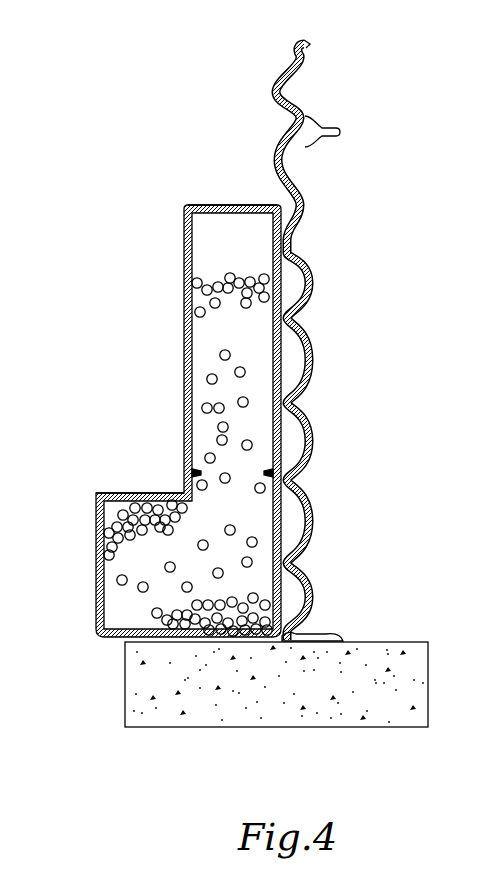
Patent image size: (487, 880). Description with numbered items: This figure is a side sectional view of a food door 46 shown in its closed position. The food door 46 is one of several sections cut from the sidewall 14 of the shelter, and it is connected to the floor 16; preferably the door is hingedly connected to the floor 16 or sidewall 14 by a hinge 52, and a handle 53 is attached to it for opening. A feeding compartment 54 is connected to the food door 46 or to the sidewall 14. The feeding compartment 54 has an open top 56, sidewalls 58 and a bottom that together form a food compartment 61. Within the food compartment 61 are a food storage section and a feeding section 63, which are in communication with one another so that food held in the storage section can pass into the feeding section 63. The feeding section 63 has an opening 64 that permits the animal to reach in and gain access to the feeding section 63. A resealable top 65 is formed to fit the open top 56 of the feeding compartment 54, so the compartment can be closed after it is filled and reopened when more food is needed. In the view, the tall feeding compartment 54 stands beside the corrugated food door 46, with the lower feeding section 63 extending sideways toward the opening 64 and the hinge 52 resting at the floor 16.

The sidewall 14 is at (299, 47).
The floor 16 is at (130, 642).
The food door 46 is at (358, 367).
The hinge 52 is at (330, 638).
The handle 53 is at (320, 132).
The feeding compartment 54 is at (177, 189).
The open top 56 is at (212, 241).
The sidewalls 58 is at (195, 302).
The food compartment 61 is at (214, 374).
The feeding section 63 is at (137, 553).
The opening 64 is at (136, 493).
The resealable top 65 is at (245, 205).